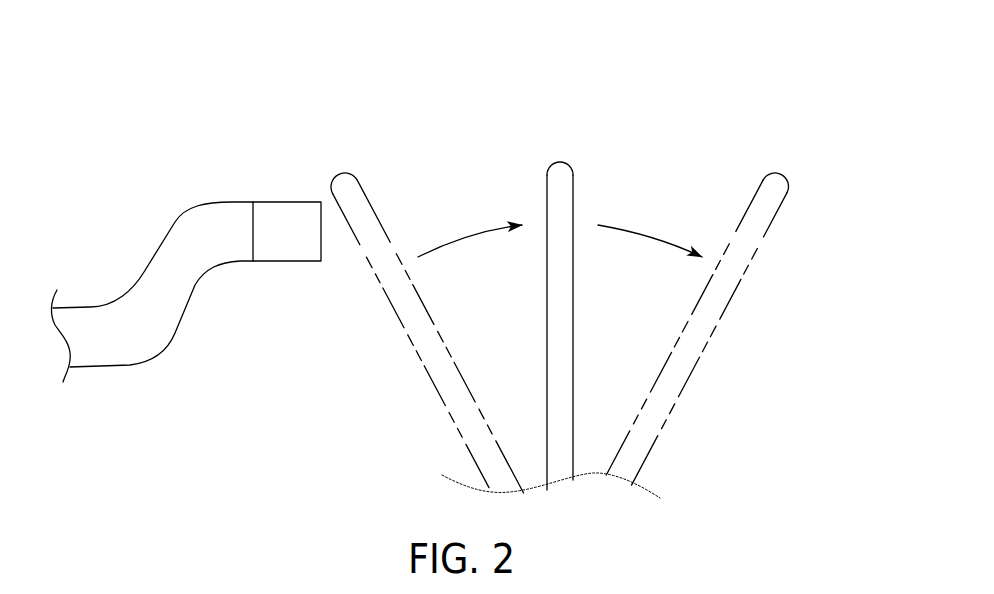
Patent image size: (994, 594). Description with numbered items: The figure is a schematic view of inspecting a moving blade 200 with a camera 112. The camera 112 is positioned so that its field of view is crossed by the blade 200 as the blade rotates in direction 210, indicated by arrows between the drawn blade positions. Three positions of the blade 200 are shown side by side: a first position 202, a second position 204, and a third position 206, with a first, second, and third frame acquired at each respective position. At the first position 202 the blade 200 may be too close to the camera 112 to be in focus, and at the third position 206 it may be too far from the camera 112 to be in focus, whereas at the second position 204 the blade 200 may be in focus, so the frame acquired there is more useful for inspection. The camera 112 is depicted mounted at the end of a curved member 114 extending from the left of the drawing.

The camera 112 is at (287, 200).
The tube 114 is at (173, 225).
The moving blade 200 is at (558, 160).
The first position 202 is at (352, 167).
The second position 204 is at (585, 158).
The third position 206 is at (788, 162).
The direction 210 is at (465, 233).